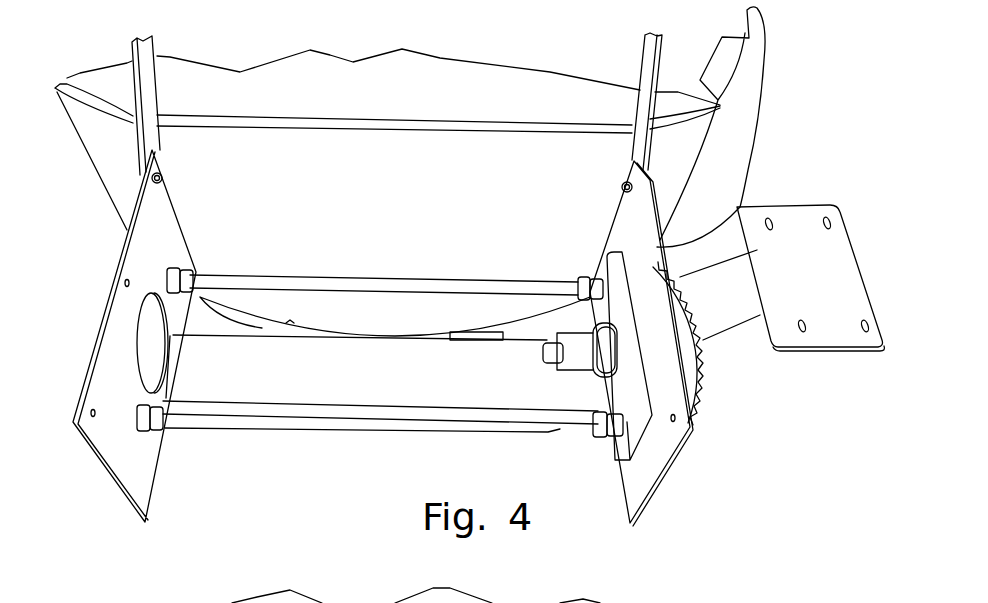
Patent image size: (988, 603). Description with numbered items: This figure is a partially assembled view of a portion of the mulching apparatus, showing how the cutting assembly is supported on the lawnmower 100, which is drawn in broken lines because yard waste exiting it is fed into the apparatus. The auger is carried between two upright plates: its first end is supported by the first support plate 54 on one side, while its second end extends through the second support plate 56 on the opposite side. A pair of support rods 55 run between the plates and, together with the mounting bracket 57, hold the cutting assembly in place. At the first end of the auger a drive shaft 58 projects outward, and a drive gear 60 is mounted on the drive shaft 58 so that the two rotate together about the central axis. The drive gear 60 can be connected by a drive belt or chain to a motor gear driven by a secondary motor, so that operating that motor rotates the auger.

The lawnmower 100 is at (720, 173).
The first support plate 54 is at (662, 453).
The support rods 55 is at (338, 418).
The second support plate 56 is at (120, 448).
The mounting bracket 57 is at (253, 385).
The drive shaft 58 is at (577, 357).
The drive gear 60 is at (683, 347).